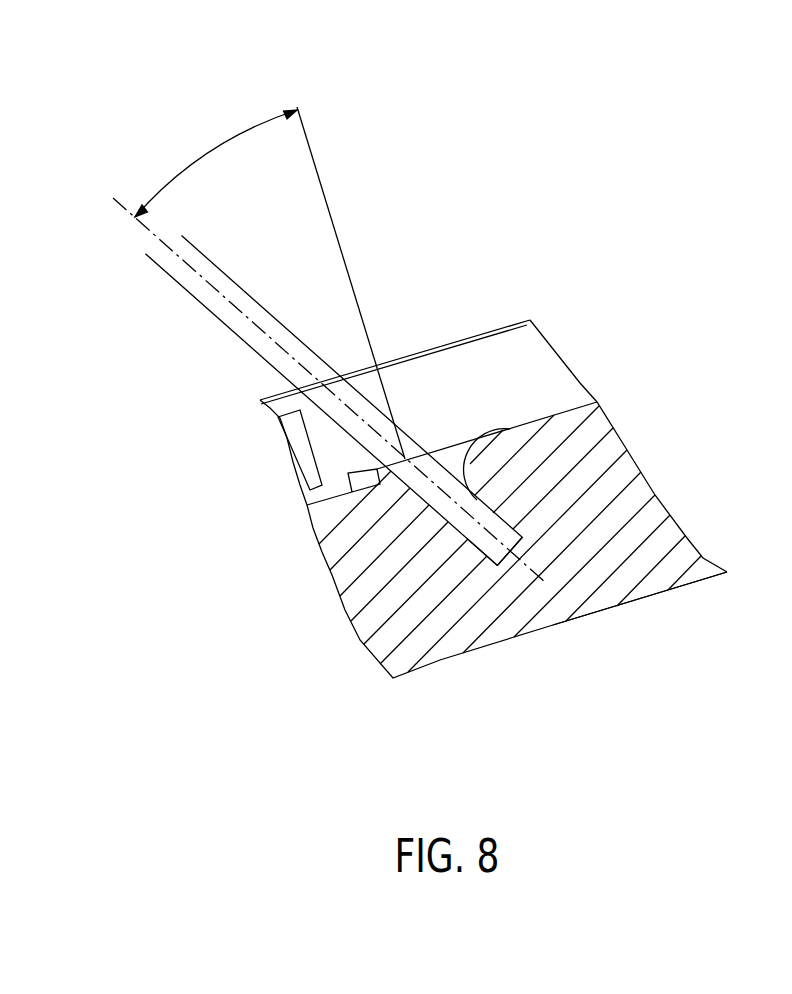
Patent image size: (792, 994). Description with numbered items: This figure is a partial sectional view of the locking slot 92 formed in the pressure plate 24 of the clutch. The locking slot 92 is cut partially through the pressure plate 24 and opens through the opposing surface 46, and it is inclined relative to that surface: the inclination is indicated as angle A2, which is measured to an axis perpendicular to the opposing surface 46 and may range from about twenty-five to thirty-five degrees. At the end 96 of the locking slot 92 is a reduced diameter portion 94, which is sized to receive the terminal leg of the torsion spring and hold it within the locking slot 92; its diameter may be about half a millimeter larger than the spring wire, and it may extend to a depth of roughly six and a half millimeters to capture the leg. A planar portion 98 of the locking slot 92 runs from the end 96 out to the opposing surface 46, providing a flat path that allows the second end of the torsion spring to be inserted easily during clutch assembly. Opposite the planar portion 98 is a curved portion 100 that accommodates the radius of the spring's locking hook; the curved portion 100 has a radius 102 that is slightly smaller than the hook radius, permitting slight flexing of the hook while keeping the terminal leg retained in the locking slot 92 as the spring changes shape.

The pressure plate 24 is at (693, 573).
The opposing surface 46 is at (577, 413).
The locking slot 92 is at (425, 480).
The reduced diameter portion 94 is at (489, 559).
The end 96 is at (445, 524).
The planar portion 98 is at (335, 580).
The curved portion 100 is at (470, 455).
The radius 102 is at (447, 347).
The angle A2 is at (228, 142).